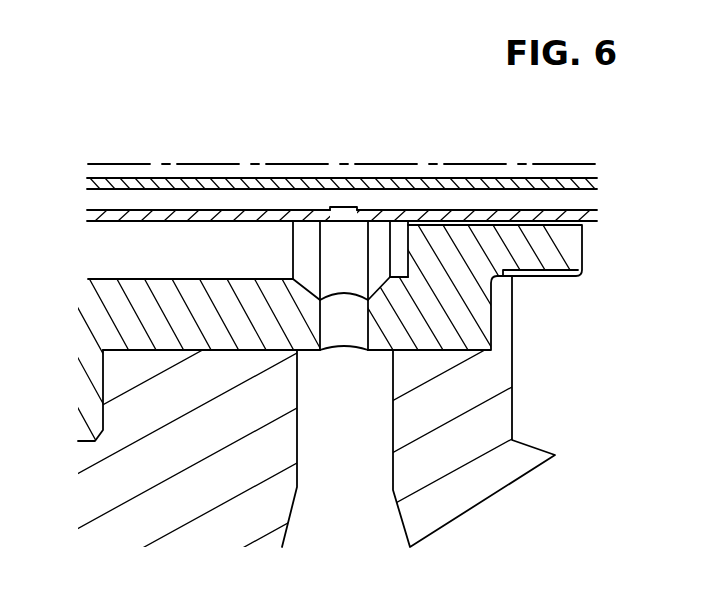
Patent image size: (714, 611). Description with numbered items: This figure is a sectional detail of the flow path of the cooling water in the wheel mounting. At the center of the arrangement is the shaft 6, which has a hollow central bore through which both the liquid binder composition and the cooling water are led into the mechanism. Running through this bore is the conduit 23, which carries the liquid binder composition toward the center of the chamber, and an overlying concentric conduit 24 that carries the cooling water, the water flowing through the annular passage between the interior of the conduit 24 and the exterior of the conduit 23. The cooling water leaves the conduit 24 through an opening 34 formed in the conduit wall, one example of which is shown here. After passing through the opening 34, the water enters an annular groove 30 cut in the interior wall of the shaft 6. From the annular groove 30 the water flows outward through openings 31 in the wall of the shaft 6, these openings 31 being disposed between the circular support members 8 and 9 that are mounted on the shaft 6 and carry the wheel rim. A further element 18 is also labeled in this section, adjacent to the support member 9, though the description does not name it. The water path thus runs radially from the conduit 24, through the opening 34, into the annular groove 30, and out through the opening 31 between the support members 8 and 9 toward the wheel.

The shaft 6 is at (480, 317).
The circular support member 8 is at (286, 500).
The circular support member 9 is at (406, 471).
The flange 18 is at (562, 262).
The conduit 23 is at (566, 182).
The concentric conduit 24 is at (475, 182).
The annular groove 30 is at (308, 278).
The opening 31 is at (347, 329).
The opening 34 is at (343, 210).